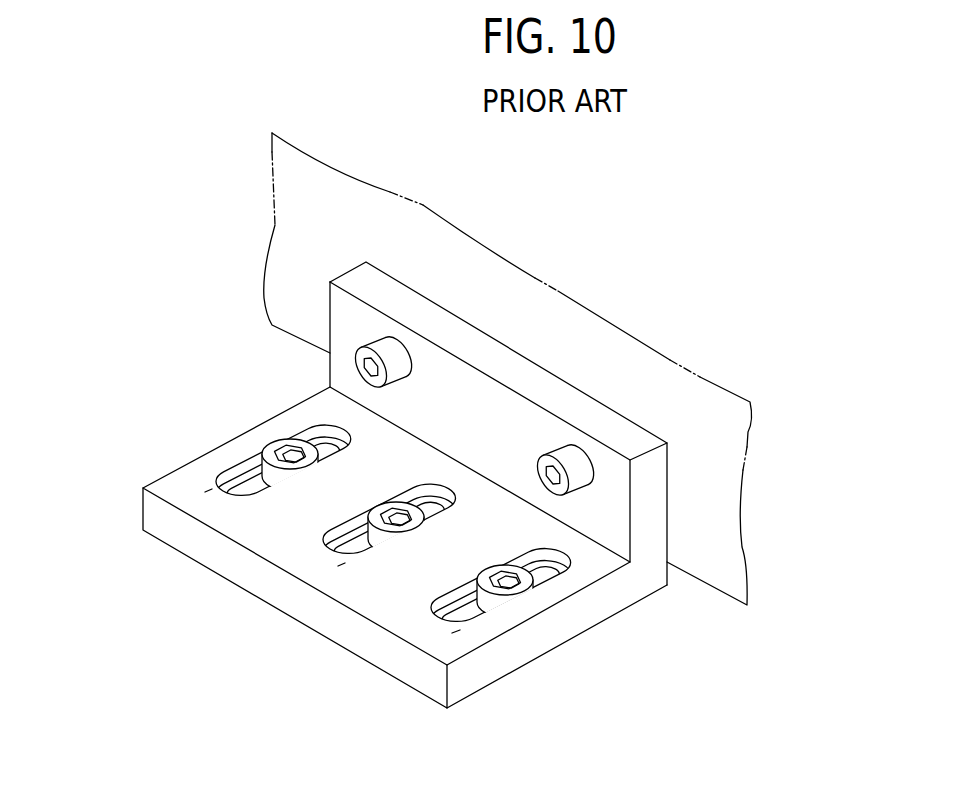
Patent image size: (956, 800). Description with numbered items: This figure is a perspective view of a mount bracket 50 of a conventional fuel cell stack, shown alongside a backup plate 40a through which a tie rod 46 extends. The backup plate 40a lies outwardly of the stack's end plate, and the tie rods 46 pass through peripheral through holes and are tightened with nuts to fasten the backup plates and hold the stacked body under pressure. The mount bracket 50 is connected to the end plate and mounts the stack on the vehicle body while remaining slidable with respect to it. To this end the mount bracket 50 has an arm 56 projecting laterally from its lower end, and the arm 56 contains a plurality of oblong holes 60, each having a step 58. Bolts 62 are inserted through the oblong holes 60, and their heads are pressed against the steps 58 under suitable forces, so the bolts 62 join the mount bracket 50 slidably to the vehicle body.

The backup plate 40a is at (293, 225).
The tie rod 46 is at (387, 340).
The mount bracket 50 is at (364, 473).
The arm 56 is at (157, 517).
The step 58 is at (237, 477).
The oblong hole 60 is at (210, 490).
The bolt 62 is at (281, 441).